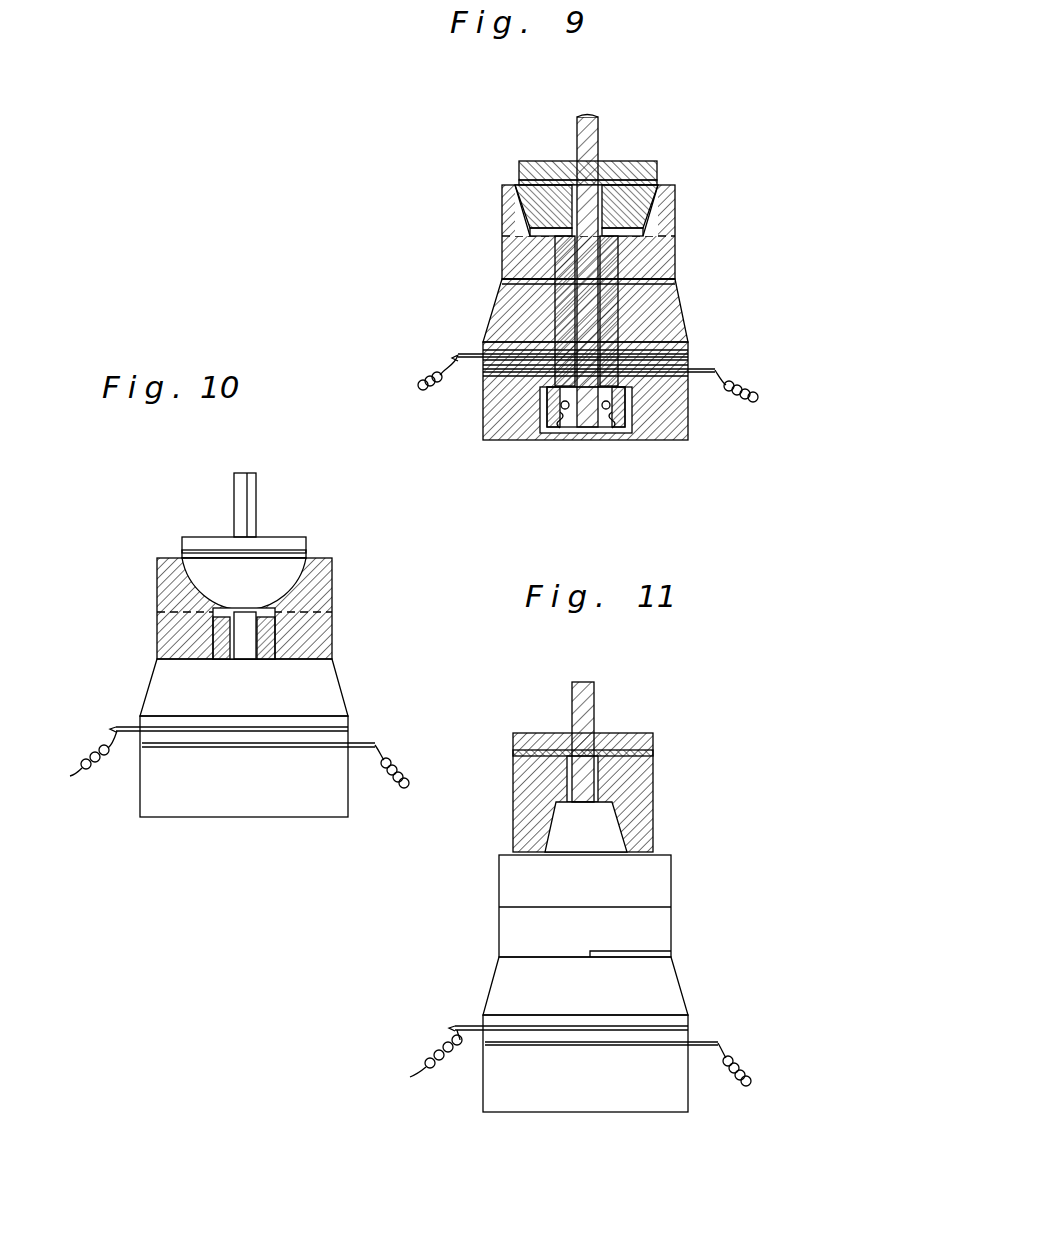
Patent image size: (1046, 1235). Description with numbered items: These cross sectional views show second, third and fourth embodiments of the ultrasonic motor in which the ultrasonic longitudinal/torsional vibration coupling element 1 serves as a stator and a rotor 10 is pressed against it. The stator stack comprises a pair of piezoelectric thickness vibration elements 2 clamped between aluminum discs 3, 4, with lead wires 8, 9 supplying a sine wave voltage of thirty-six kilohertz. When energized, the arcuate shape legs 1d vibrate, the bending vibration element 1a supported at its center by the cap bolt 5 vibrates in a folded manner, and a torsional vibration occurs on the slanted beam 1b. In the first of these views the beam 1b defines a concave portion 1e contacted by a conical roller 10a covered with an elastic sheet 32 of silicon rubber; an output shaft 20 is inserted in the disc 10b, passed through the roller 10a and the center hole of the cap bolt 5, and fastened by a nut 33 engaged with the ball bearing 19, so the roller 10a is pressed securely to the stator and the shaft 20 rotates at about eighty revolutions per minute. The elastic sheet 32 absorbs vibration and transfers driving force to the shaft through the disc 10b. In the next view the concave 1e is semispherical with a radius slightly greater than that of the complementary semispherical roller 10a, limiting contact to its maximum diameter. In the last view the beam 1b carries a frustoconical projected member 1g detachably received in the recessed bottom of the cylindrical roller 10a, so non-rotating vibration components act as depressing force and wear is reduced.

In FIG. 9, the ultrasonic longitudinal/torsional vibration coupling element 1 is at (483, 235).
In FIG. 10, the ultrasonic longitudinal/torsional vibration coupling element 1 is at (148, 586).
In FIG. 11, the ultrasonic longitudinal/torsional vibration coupling element 1 is at (497, 893).
In FIG. 9, the bending vibration element 1a is at (676, 250).
In FIG. 9, the beam 1b is at (676, 213).
In FIG. 10, the beam 1b is at (315, 558).
In FIG. 11, the beam 1b is at (645, 883).
In FIG. 9, the arcuate shape leg 1d is at (676, 277).
In FIG. 9, the concave portion 1e is at (676, 197).
In FIG. 10, the concave portion 1e is at (292, 594).
In FIG. 11, the projected member 1g is at (600, 835).
In FIG. 9, the piezoelectric thickness vibration element 2 is at (478, 346).
In FIG. 10, the piezoelectric thickness vibration element 2 is at (150, 727).
In FIG. 11, the piezoelectric thickness vibration element 2 is at (507, 1020).
In FIG. 9, the aluminum disc 3 is at (676, 317).
In FIG. 10, the aluminum disc 3 is at (315, 690).
In FIG. 11, the aluminum disc 3 is at (655, 980).
In FIG. 9, the aluminum disc 4 is at (668, 430).
In FIG. 10, the aluminum disc 4 is at (243, 802).
In FIG. 11, the aluminum disc 4 is at (628, 1112).
In FIG. 9, the cap bolt 5 is at (503, 288).
In FIG. 10, the cap bolt 5 is at (215, 637).
In FIG. 9, the lead wire 8 is at (762, 392).
In FIG. 10, the lead wire 8 is at (410, 768).
In FIG. 11, the lead wire 8 is at (750, 1072).
In FIG. 9, the lead wire 9 is at (420, 380).
In FIG. 10, the lead wire 9 is at (100, 748).
In FIG. 11, the lead wire 9 is at (420, 1058).
In FIG. 10, the rotor 10 is at (275, 525).
In FIG. 11, the rotor 10 is at (662, 777).
In FIG. 9, the conical roller 10a is at (530, 197).
In FIG. 10, the conical roller 10a is at (283, 574).
In FIG. 11, the conical roller 10a is at (638, 808).
In FIG. 9, the disc 10b is at (536, 162).
In FIG. 10, the disc 10b is at (205, 537).
In FIG. 11, the disc 10b is at (640, 733).
In FIG. 9, the ball bearing 19 is at (611, 425).
In FIG. 9, the output shaft 20 is at (592, 133).
In FIG. 10, the output shaft 20 is at (245, 638).
In FIG. 9, the elastic sheet 32 is at (657, 178).
In FIG. 10, the elastic sheet 32 is at (182, 554).
In FIG. 11, the elastic sheet 32 is at (653, 755).
In FIG. 9, the nut 33 is at (573, 425).